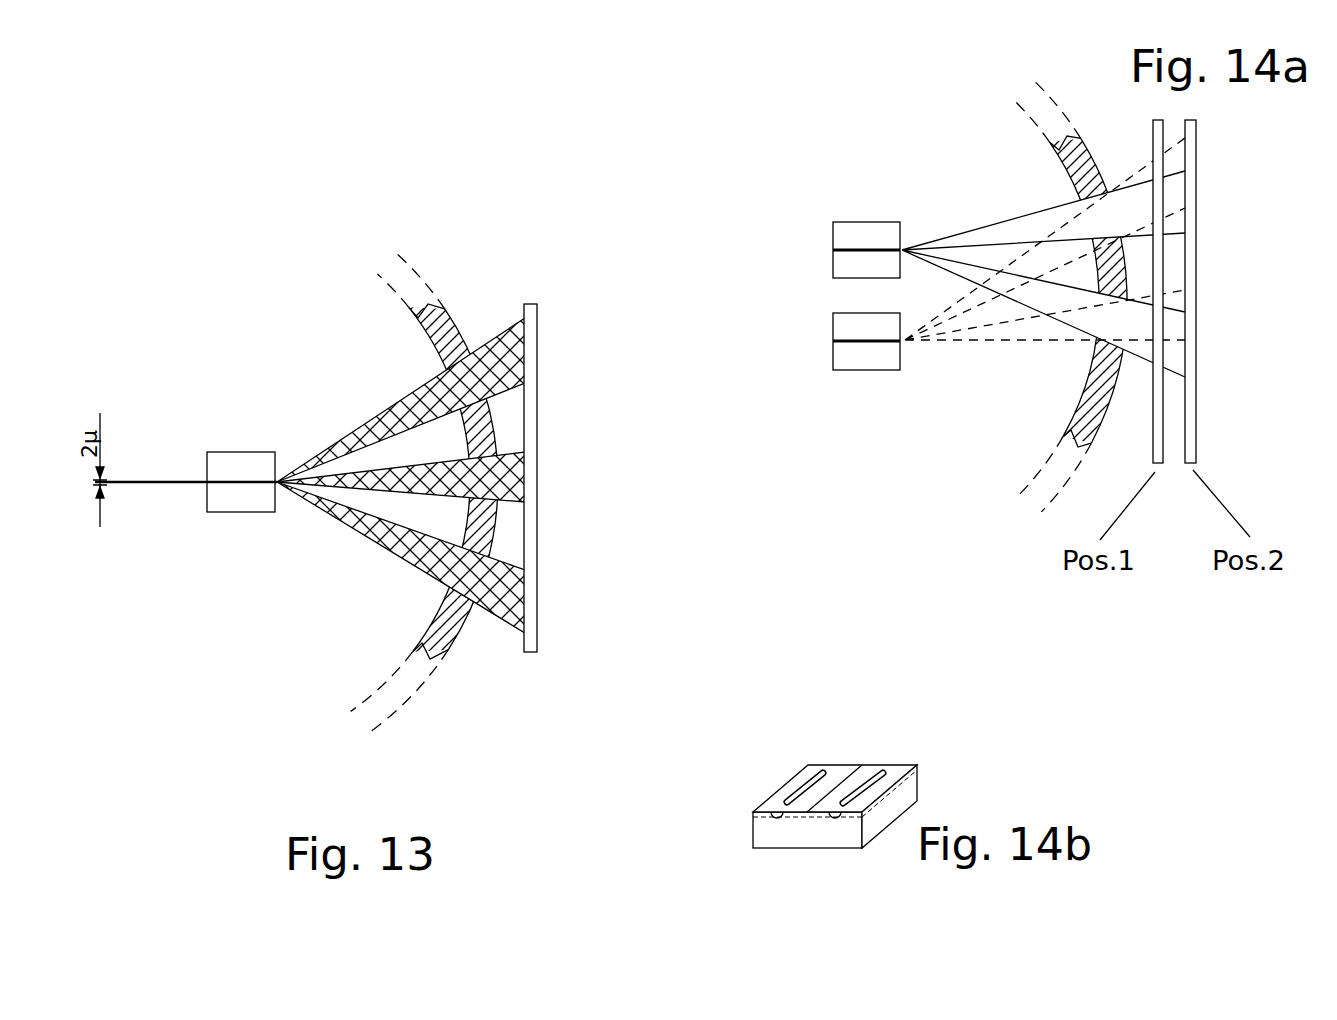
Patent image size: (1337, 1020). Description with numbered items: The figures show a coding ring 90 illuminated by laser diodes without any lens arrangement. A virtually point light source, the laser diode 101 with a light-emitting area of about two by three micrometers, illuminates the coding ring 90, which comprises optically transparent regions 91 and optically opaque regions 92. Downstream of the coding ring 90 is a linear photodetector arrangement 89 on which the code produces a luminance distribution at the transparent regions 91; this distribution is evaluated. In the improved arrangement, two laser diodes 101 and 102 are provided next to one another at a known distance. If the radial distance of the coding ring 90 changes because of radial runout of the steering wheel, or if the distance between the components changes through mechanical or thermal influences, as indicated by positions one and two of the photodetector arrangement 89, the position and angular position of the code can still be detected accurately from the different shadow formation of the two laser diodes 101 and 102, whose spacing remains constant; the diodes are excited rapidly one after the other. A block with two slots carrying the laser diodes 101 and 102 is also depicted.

In FIG. 13, the linear photodetector arrangement 89 is at (538, 328).
In FIG. 14A, the linear photodetector arrangement 89 is at (1165, 442).
In FIG. 13, the coding ring 90 is at (398, 273).
In FIG. 14A, the coding ring 90 is at (1047, 106).
In FIG. 13, the optically transparent regions 91 is at (437, 598).
In FIG. 13, the optically opaque regions 92 is at (453, 652).
In FIG. 13, the laser diode 101 is at (230, 462).
In FIG. 14A, the laser diode 101 is at (864, 232).
In FIG. 14B, the laser diode 101 is at (798, 778).
In FIG. 14A, the laser diode 102 is at (863, 362).
In FIG. 14B, the laser diode 102 is at (898, 768).